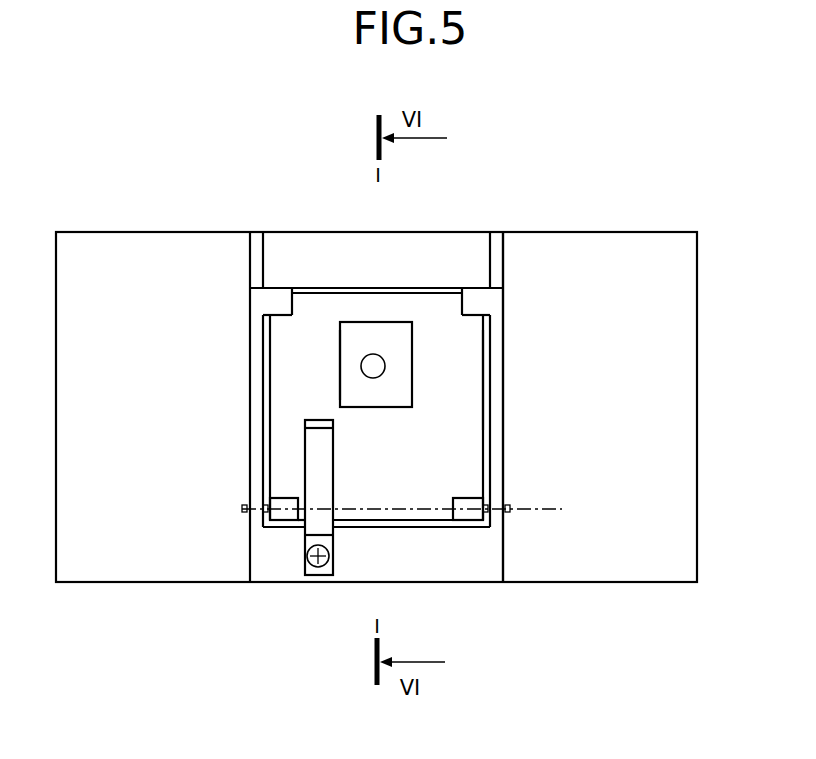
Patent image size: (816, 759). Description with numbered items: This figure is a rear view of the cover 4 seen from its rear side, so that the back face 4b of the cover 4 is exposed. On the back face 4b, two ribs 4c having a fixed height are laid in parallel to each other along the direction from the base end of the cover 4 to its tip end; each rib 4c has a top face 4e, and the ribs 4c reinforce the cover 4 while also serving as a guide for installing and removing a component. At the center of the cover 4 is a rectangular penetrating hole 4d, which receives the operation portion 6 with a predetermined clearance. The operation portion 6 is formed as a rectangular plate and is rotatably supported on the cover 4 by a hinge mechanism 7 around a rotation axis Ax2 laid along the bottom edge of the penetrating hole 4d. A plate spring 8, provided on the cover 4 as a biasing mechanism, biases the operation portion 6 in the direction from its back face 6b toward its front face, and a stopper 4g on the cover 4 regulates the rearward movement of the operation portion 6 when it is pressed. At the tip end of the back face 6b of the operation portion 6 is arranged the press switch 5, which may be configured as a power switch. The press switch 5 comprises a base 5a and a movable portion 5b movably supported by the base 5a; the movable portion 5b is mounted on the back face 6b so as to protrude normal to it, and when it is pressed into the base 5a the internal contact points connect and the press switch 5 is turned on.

The cover 4 is at (644, 226).
The back face 4b is at (573, 248).
The rib 4c is at (247, 420).
The penetrating hole 4d is at (372, 291).
The top face 4e is at (258, 463).
The stopper 4g is at (281, 298).
The press switch 5 is at (392, 316).
The base 5a is at (352, 345).
The movable portion 5b is at (363, 367).
The operation portion 6 is at (489, 328).
The back face 6b is at (468, 382).
The hinge mechanism 7 is at (283, 529).
The plate spring 8 is at (298, 563).
The rotation axis Ax2 is at (555, 511).